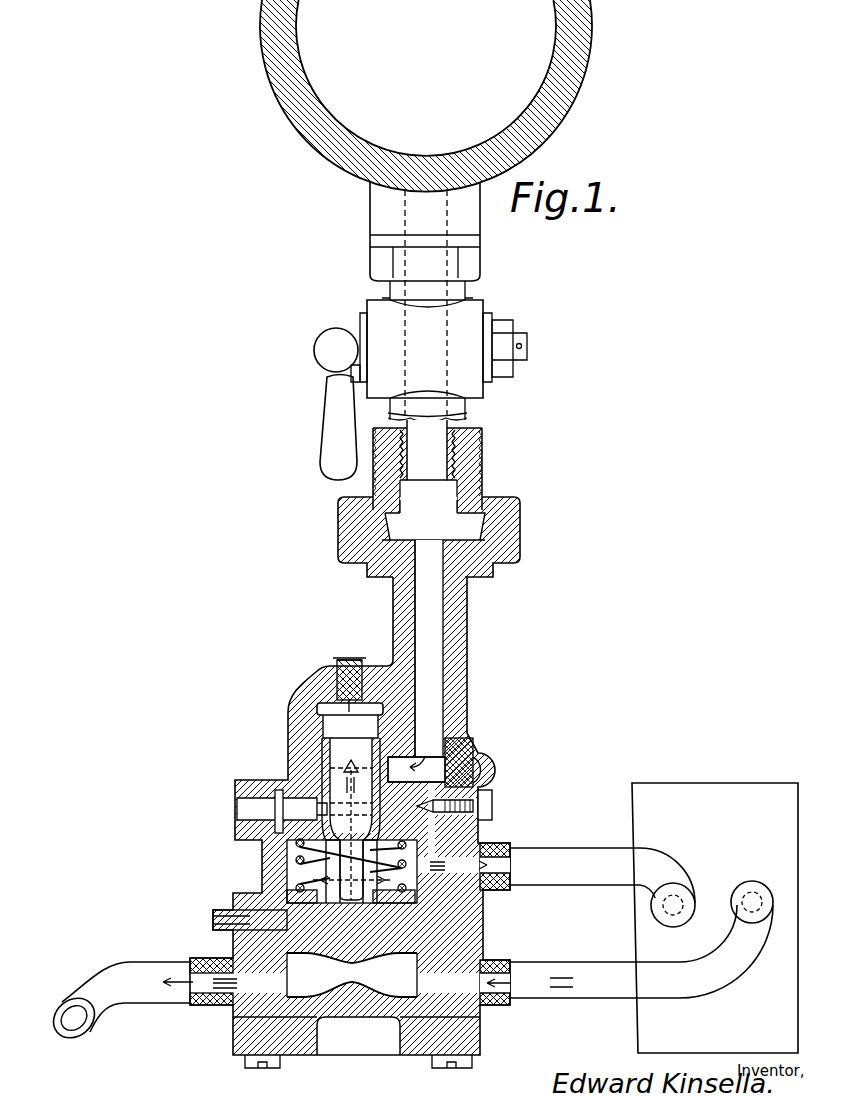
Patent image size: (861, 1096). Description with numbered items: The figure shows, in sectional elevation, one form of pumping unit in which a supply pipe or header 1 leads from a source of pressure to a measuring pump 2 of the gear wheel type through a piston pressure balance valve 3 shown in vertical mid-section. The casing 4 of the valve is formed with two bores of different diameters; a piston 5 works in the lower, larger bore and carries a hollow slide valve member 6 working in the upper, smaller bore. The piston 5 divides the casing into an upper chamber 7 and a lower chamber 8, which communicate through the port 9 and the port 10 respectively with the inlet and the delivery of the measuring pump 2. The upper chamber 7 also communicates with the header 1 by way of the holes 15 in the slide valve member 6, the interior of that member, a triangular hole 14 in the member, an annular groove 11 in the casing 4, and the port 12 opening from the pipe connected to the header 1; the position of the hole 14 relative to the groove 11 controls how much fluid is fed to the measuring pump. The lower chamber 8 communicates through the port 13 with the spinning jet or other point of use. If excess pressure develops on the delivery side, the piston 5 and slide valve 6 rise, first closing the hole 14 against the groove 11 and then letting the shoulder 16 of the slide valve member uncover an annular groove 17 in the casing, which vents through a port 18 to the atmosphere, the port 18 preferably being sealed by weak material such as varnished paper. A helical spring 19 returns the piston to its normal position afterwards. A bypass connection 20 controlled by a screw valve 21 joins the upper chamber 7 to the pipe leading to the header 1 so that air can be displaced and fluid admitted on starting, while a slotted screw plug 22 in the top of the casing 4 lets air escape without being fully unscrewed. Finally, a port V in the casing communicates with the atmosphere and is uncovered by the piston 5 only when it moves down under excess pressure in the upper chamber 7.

The supply pipe or header 1 is at (362, 125).
The measuring pump 2 is at (648, 809).
The piston pressure balance valve 3 is at (302, 718).
The casing 4 is at (318, 686).
The piston 5 is at (355, 957).
The hollow slide valve member 6 is at (317, 782).
The upper chamber 7 is at (293, 873).
The lower chamber 8 is at (337, 967).
The port 9 is at (500, 863).
The port 10 is at (503, 997).
The annular groove 11 is at (317, 763).
The port 12 is at (410, 766).
The port 13 is at (203, 992).
The hole 14 is at (351, 820).
The holes 15 is at (330, 893).
The shoulder 16 is at (293, 853).
The annular groove 17 is at (388, 807).
The port 18 is at (297, 810).
The helical spring 19 is at (288, 876).
The bypass connection 20 is at (447, 797).
The screw valve 21 is at (492, 800).
The screw plug 22 is at (352, 657).
The port V is at (250, 920).